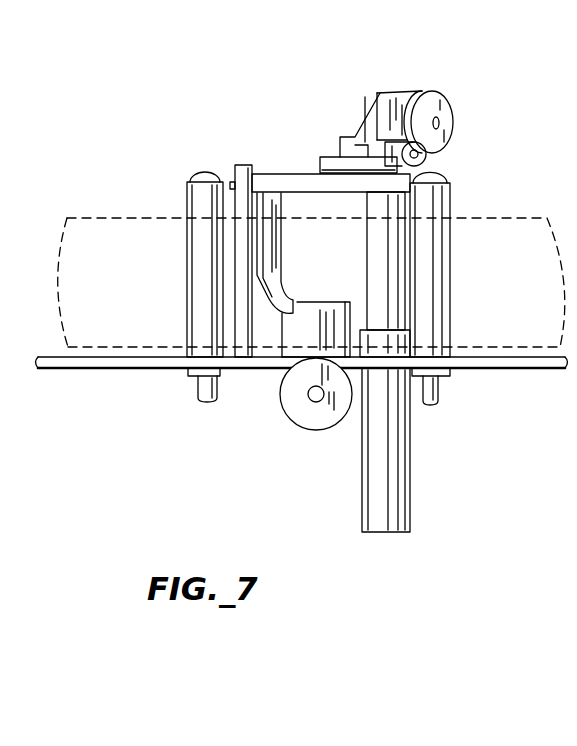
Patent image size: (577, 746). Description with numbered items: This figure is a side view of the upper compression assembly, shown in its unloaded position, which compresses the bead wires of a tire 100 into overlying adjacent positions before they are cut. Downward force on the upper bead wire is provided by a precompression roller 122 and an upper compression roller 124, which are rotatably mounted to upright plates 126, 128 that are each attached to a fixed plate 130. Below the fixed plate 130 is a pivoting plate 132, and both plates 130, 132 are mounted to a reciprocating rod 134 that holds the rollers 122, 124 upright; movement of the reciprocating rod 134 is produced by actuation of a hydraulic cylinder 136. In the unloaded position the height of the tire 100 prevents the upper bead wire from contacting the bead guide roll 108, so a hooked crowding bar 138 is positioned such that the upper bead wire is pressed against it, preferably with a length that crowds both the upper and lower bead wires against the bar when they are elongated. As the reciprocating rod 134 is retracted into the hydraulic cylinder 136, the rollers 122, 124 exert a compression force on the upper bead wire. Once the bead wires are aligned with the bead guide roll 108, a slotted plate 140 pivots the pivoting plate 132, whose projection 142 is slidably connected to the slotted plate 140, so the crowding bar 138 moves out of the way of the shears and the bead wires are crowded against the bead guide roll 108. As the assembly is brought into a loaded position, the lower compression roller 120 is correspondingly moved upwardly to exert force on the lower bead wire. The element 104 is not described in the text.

The tire 100 is at (102, 216).
The right support post 104 is at (432, 207).
The bead guide roll 108 is at (300, 340).
The lower compression roller 120 is at (302, 418).
The precompression roller 122 is at (447, 110).
The upper compression roller 124 is at (427, 163).
The upright plate 126 is at (395, 100).
The upright plate 128 is at (367, 95).
The fixed plate 130 is at (330, 153).
The pivoting plate 132 is at (296, 187).
The reciprocating rod 134 is at (383, 295).
The hydraulic cylinder 136 is at (405, 343).
The hooked crowding bar 138 is at (275, 278).
The slotted plate 140 is at (245, 257).
The projection 142 is at (233, 180).